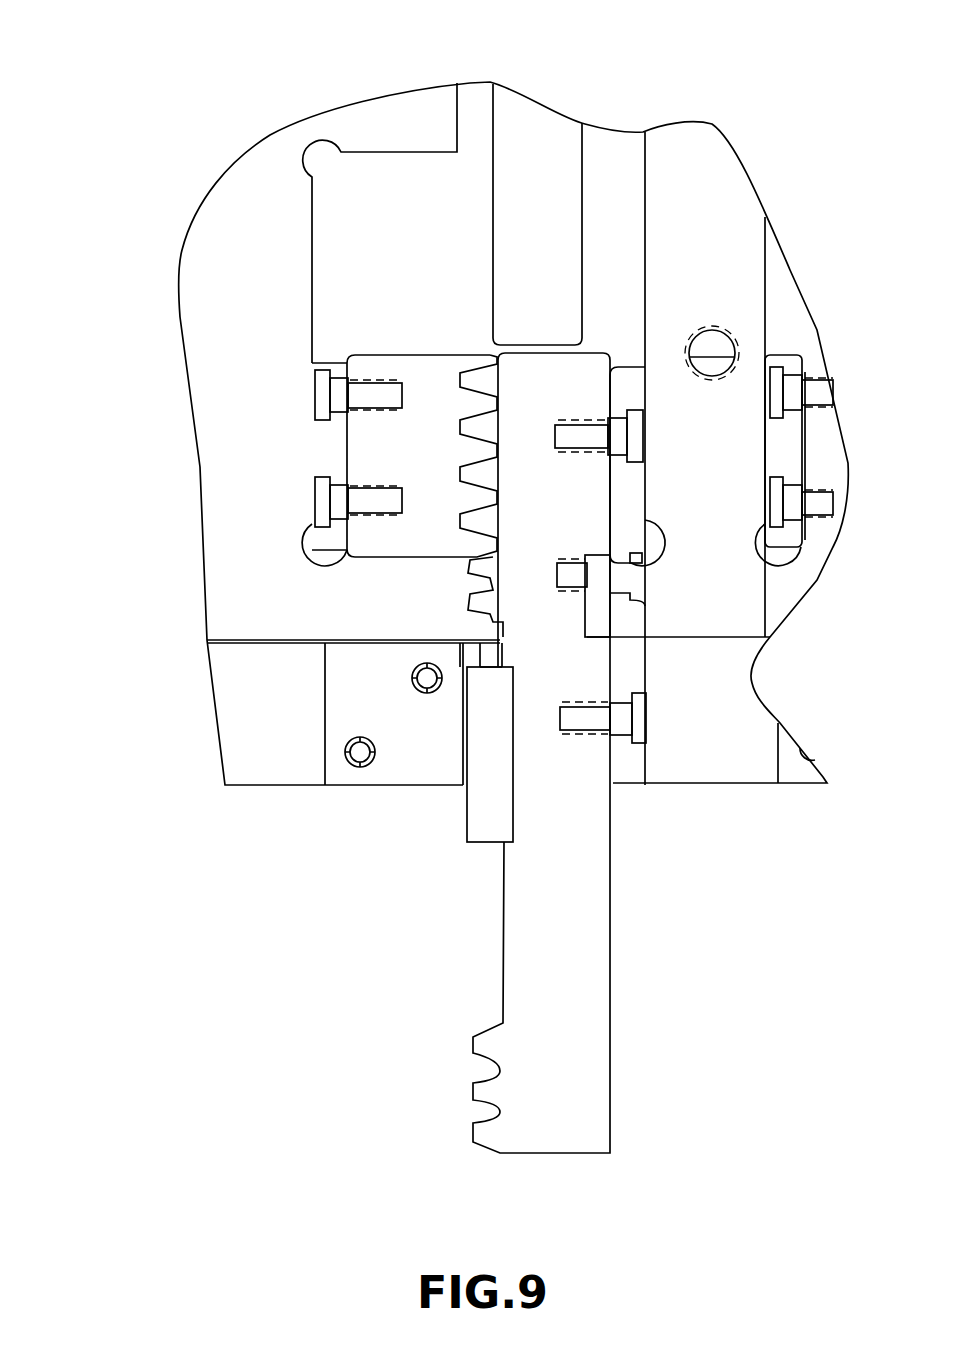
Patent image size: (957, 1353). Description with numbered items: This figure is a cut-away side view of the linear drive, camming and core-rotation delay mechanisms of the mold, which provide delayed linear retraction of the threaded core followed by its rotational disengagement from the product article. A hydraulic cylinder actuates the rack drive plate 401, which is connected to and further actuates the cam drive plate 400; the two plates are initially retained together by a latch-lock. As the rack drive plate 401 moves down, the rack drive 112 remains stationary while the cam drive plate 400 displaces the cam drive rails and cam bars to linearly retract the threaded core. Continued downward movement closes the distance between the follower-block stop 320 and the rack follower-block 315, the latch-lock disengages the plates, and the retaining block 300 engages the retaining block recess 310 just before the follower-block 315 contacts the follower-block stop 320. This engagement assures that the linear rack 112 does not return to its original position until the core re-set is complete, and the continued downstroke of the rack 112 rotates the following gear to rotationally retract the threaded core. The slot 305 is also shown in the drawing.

The rack drive 112 is at (612, 930).
The retaining block 300 is at (397, 763).
The slot 305 is at (530, 123).
The retaining block recess 310 is at (460, 926).
The rack follower-block 315 is at (370, 445).
The follower-block stop 320 is at (400, 152).
The cam drive plate 400 is at (203, 268).
The rack drive plate 401 is at (743, 295).